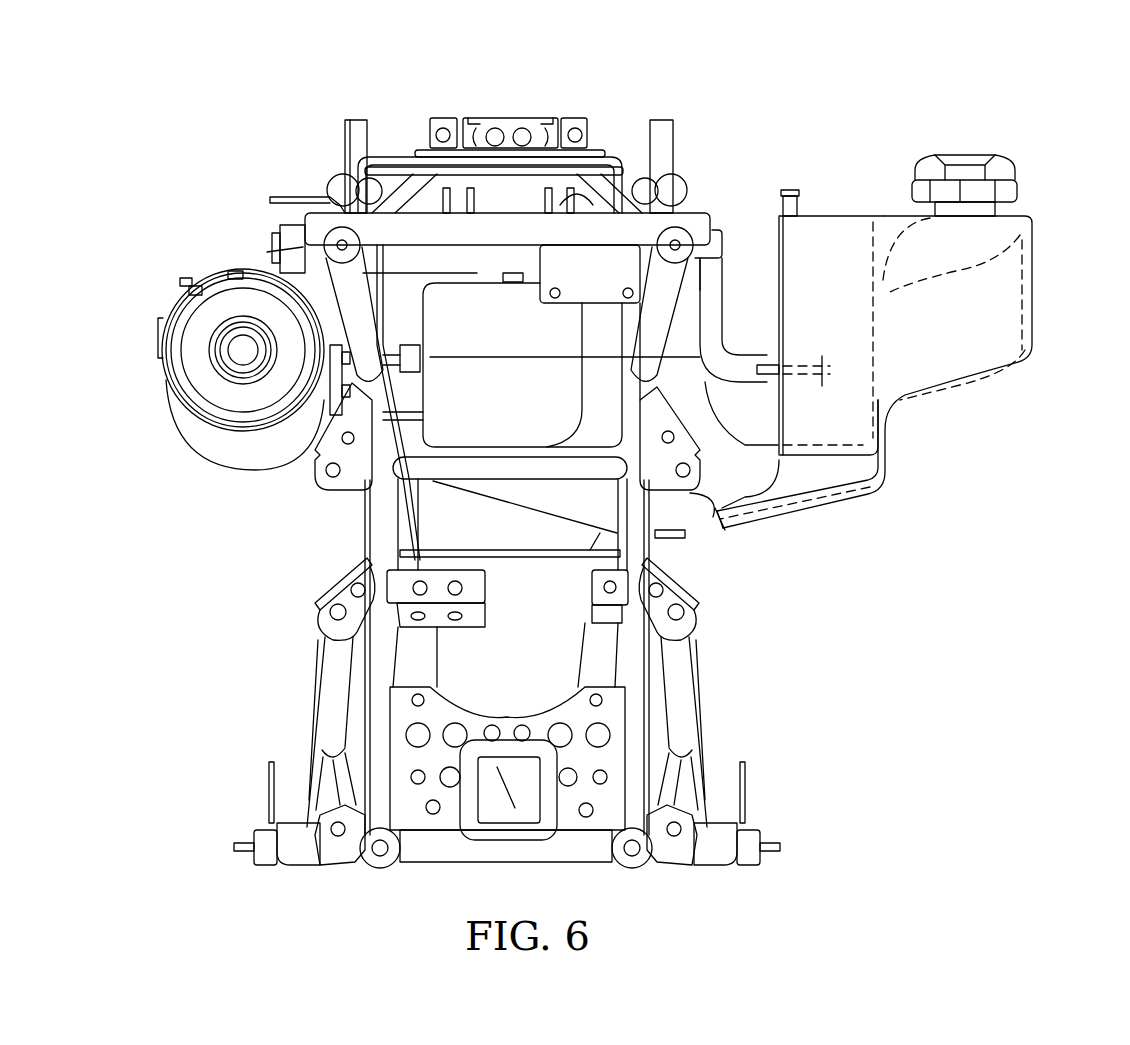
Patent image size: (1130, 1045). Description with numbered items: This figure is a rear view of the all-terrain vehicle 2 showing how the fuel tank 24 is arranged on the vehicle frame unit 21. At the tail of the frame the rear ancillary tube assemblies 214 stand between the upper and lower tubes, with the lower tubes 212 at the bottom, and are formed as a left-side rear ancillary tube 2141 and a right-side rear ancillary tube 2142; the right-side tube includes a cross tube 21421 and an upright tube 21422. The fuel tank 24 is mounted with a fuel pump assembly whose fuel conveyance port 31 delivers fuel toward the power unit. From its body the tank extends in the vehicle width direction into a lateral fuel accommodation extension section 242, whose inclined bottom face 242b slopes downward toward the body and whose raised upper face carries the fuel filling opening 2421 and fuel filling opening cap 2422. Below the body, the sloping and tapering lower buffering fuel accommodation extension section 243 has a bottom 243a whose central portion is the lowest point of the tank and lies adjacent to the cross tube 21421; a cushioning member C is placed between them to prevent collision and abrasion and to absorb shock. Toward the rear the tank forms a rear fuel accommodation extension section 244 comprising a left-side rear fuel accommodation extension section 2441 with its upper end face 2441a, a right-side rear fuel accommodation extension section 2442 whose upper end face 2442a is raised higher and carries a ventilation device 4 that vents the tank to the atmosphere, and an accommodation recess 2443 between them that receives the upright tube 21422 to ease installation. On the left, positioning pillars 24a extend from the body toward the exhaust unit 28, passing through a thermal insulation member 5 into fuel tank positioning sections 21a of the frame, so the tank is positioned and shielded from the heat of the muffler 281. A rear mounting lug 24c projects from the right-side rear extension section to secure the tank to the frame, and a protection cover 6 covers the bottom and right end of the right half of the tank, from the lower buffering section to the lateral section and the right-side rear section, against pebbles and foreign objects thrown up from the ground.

The all-terrain vehicle 2 is at (962, 578).
The vehicle frame unit 21 is at (722, 727).
The fuel tank positioning sections 21a is at (327, 377).
The lower tubes 212 is at (295, 852).
The rear ancillary tube assemblies 214 is at (365, 708).
The left-side rear ancillary tube 2141 is at (378, 665).
The right-side rear ancillary tube 2142 is at (820, 600).
The cross tube 21421 is at (705, 570).
The upright tube 21422 is at (700, 660).
The fuel tank 24 is at (503, 502).
The positioning pillars 24a is at (400, 430).
The rear mounting lug 24c is at (900, 395).
The lateral fuel accommodation extension section 242 is at (1000, 245).
The bottom face 242b is at (990, 320).
The fuel filling opening 2421 is at (955, 200).
The fuel filling opening cap 2422 is at (990, 165).
The lower buffering fuel accommodation extension section 243 is at (800, 485).
The bottom 243a is at (747, 473).
The rear fuel accommodation extension section 244 is at (805, 75).
The left-side rear fuel accommodation extension section 2441 is at (455, 310).
The upper end face 2441a is at (468, 258).
The right-side rear fuel accommodation extension section 2442 is at (745, 253).
The upper end face 2442a is at (763, 217).
The accommodation recess 2443 is at (610, 325).
The exhaust unit 28 is at (155, 404).
The muffler 281 is at (190, 440).
The fuel conveyance port 31 is at (517, 270).
The ventilation device 4 is at (793, 193).
The thermal insulation member 5 is at (303, 273).
The protection cover 6 is at (888, 455).
The cushioning member C is at (700, 535).